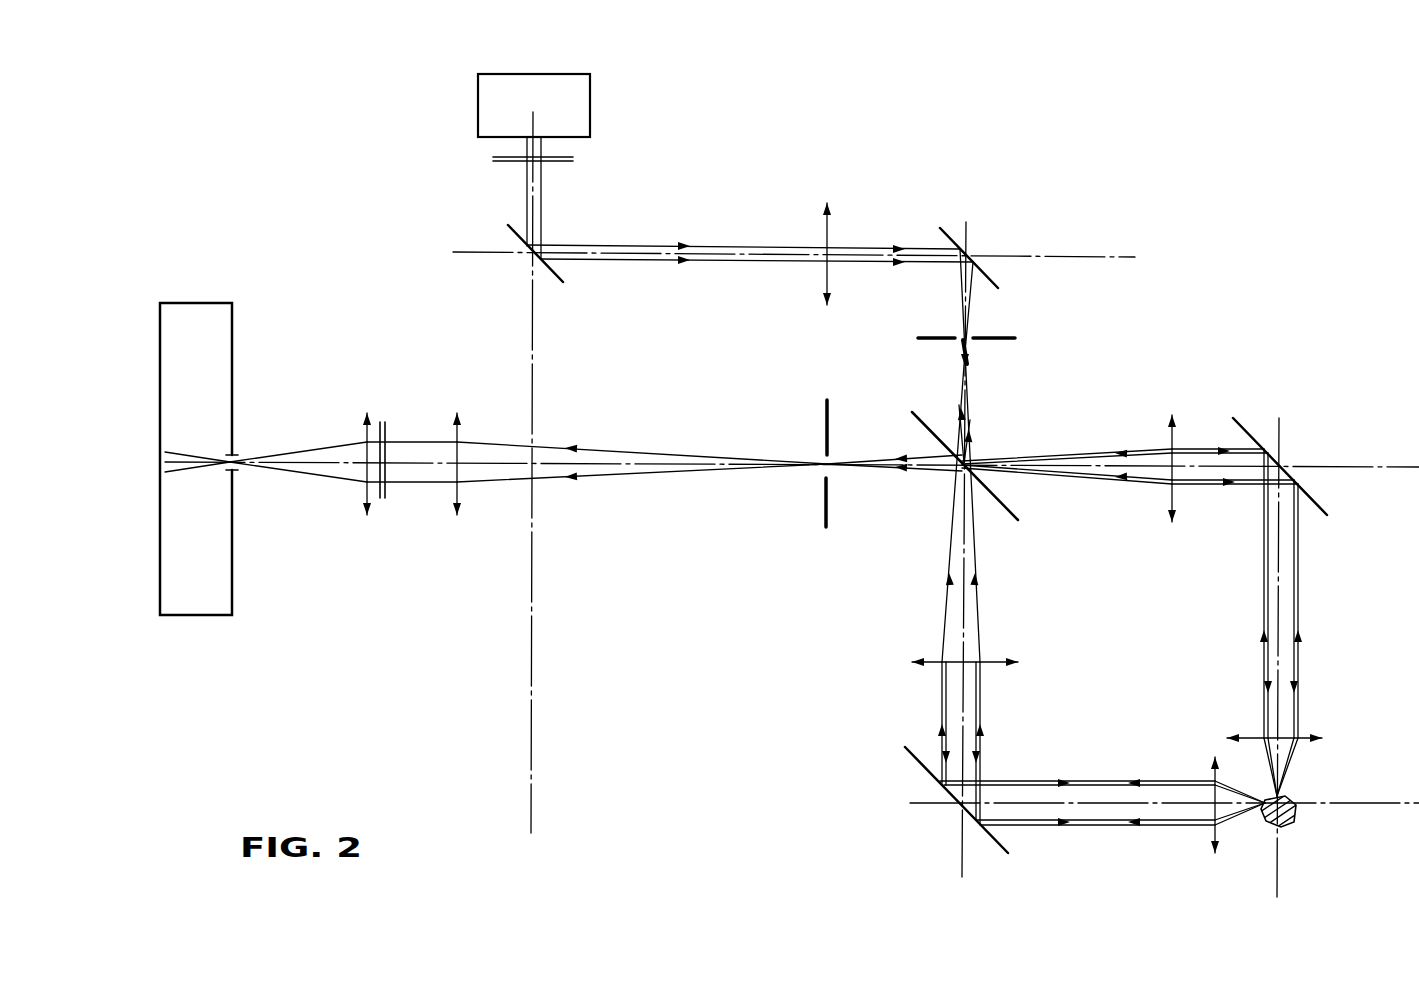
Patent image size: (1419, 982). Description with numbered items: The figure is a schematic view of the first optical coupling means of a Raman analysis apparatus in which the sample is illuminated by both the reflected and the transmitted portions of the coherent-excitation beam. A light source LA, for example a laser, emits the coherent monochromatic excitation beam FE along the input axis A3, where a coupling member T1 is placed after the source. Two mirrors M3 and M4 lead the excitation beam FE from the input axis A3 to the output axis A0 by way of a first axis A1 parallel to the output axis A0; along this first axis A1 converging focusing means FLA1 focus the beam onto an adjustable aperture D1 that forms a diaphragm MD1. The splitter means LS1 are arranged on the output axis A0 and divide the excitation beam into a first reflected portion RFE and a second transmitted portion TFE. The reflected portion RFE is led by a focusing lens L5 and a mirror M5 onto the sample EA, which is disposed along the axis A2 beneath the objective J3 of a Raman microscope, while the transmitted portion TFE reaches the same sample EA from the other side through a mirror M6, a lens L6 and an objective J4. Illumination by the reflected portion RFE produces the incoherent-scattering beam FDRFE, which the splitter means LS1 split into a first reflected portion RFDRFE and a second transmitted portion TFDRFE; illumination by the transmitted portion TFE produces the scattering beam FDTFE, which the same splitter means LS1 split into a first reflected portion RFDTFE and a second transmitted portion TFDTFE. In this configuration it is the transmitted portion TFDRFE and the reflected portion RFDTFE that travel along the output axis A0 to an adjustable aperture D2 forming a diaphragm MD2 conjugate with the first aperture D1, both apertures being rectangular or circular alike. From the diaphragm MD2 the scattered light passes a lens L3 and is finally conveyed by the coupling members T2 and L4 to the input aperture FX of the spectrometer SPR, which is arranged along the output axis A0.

The light source LA is at (480, 97).
The optical coupling member T1 is at (497, 160).
The mirror M3 is at (555, 284).
The focusing means FLA1 is at (825, 212).
The mirror M4 is at (948, 228).
The first axis A1 is at (1108, 256).
The adjustable aperture D1 is at (958, 335).
The diaphragm MD1 is at (1006, 338).
The coherent-excitation beam FE is at (960, 358).
The first reflected portion of the incoherent-scattering beam FDRFE RFDRFE is at (975, 410).
The second transmitted portion of the scattering beam FDTFE TFDTFE is at (976, 438).
The first reflected portion of the scattering beam FDTFE RFDTFE is at (892, 455).
The second transmitted portion of the incoherent-scattering beam FDRFE TFDRFE is at (912, 478).
The adjustable aperture D2 is at (822, 452).
The diaphragm MD2 is at (822, 500).
The splitter means LS1 is at (1005, 500).
The focusing lens L5 is at (1178, 420).
The mirror M5 is at (1250, 428).
The output axis A0 is at (1380, 465).
The first reflected portion of the coherent-excitation beam RFE is at (1207, 490).
The input aperture FX is at (236, 455).
The optical coupling member L4 is at (365, 500).
The optical coupling member T2 is at (385, 500).
The lens L3 is at (460, 500).
The spectrometer SPR is at (202, 620).
The input axis A3 is at (531, 808).
The lens L6 is at (1008, 660).
The second transmitted portion of the excitation beam TFE is at (985, 757).
The mirror M6 is at (985, 843).
The scattering beam FDTFE is at (1140, 828).
The objective J4 is at (1213, 848).
The sample EA is at (1298, 876).
The axis A2 is at (1370, 803).
The objective J3 is at (1320, 738).
The incoherent-scattering beam FDRFE is at (1300, 636).